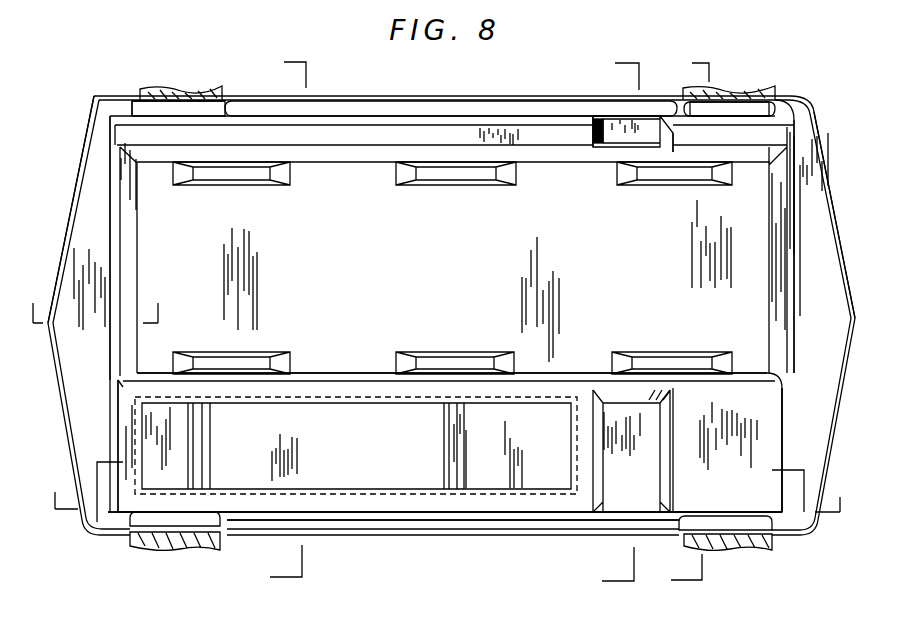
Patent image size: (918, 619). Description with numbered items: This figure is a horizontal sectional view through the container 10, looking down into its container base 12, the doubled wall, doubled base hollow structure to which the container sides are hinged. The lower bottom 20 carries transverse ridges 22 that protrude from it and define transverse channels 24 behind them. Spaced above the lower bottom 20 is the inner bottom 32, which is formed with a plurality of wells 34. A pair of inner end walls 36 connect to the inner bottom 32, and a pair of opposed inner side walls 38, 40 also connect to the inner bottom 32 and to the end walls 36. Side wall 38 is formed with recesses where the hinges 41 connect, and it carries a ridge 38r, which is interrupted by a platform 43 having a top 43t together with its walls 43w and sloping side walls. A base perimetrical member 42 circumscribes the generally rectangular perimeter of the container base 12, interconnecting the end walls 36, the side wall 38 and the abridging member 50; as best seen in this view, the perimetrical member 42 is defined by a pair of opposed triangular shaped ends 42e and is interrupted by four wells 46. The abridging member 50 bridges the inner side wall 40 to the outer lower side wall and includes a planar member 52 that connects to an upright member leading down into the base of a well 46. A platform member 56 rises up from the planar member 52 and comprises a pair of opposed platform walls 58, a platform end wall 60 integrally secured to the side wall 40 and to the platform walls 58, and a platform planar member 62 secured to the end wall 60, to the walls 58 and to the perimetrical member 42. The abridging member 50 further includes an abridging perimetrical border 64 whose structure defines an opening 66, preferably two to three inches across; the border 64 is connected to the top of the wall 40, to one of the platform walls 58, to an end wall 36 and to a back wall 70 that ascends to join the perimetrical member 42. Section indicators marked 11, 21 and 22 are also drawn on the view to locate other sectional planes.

The container 10 is at (606, 322).
The section line 11- 11 is at (275, 319).
The container base 12 is at (446, 492).
The lower bottom 20 is at (212, 549).
The section line 21- 21 is at (95, 301).
The transverse ridges 22 is at (676, 321).
The transverse channels 24 is at (193, 449).
The inner bottom 32 is at (446, 271).
The wells 34 is at (257, 180).
The inner end walls 36 is at (122, 143).
The inner side wall 38 is at (366, 157).
The ridge 38r is at (345, 137).
The inner side wall 40 is at (328, 372).
The hinges 41 is at (223, 93).
The base perimetrical member 42 is at (496, 113).
The triangular shaped ends 42e is at (73, 205).
The platform 43 is at (642, 128).
The top 43t is at (633, 135).
The bracket wall 43w is at (599, 126).
The wells 46 is at (206, 112).
The abridging member 50 is at (384, 352).
The planar member 52 is at (784, 438).
The platform member 56 is at (590, 381).
The platform walls 58 is at (667, 440).
The platform end wall 60 is at (625, 397).
The platform planar member 62 is at (605, 520).
The abridging perimetrical border 64 is at (127, 437).
The opening 66 is at (371, 482).
The back wall 70 is at (375, 514).